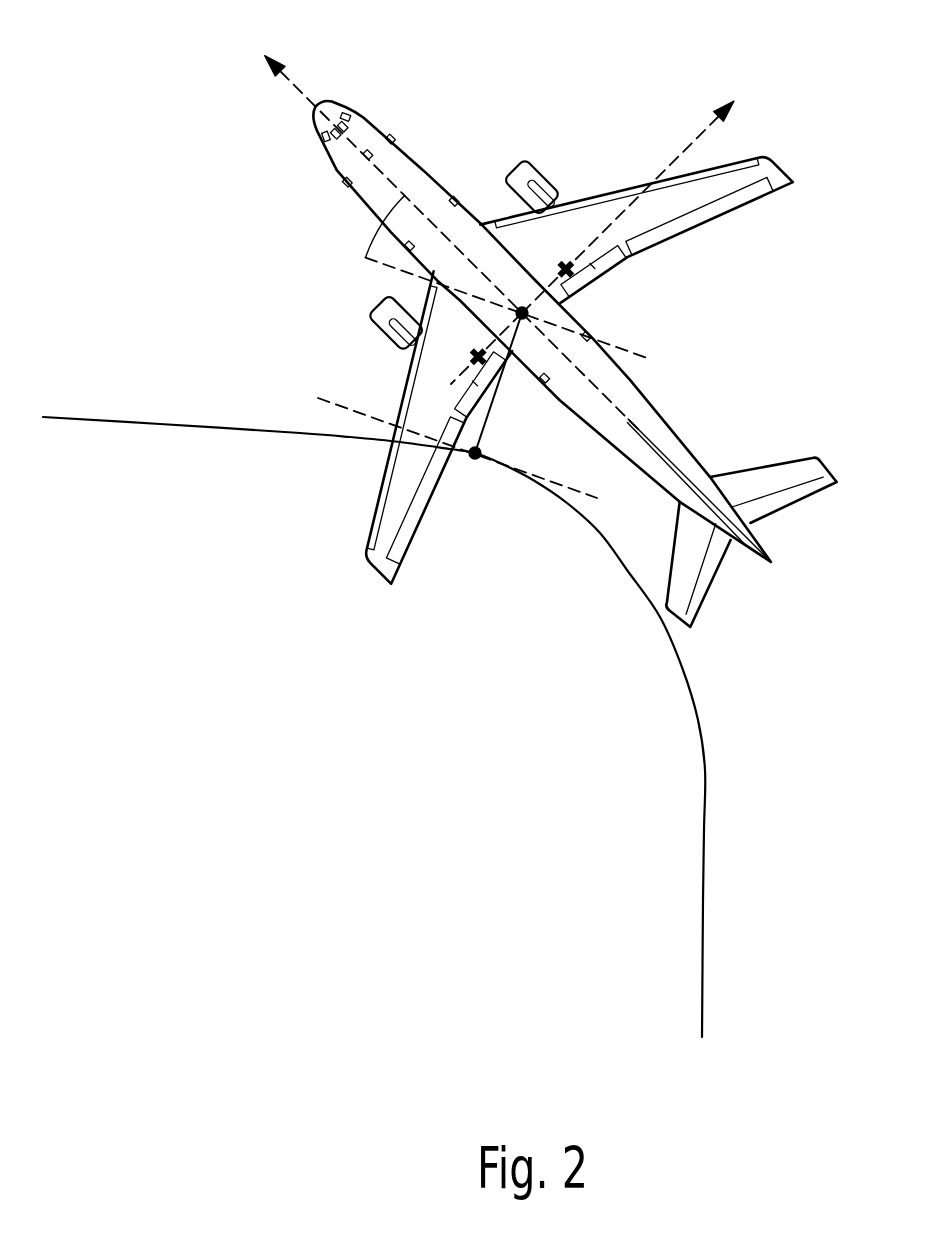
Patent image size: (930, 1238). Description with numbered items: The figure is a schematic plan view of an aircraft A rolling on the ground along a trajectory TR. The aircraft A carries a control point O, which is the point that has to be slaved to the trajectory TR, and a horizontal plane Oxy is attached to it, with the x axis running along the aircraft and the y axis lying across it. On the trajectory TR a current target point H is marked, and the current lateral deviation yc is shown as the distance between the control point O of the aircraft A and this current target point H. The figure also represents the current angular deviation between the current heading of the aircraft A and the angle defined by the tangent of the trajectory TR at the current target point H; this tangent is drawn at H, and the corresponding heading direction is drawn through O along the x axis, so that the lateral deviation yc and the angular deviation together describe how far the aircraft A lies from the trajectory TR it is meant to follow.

The trajectory TR is at (173, 427).
The aircraft A is at (418, 172).
The control point O is at (522, 313).
The current target point H is at (475, 453).
The x axis of horizontal plane Oxy x is at (452, 232).
The y axis of horizontal plane Oxy y is at (608, 242).
The current lateral deviation yc is at (471, 383).